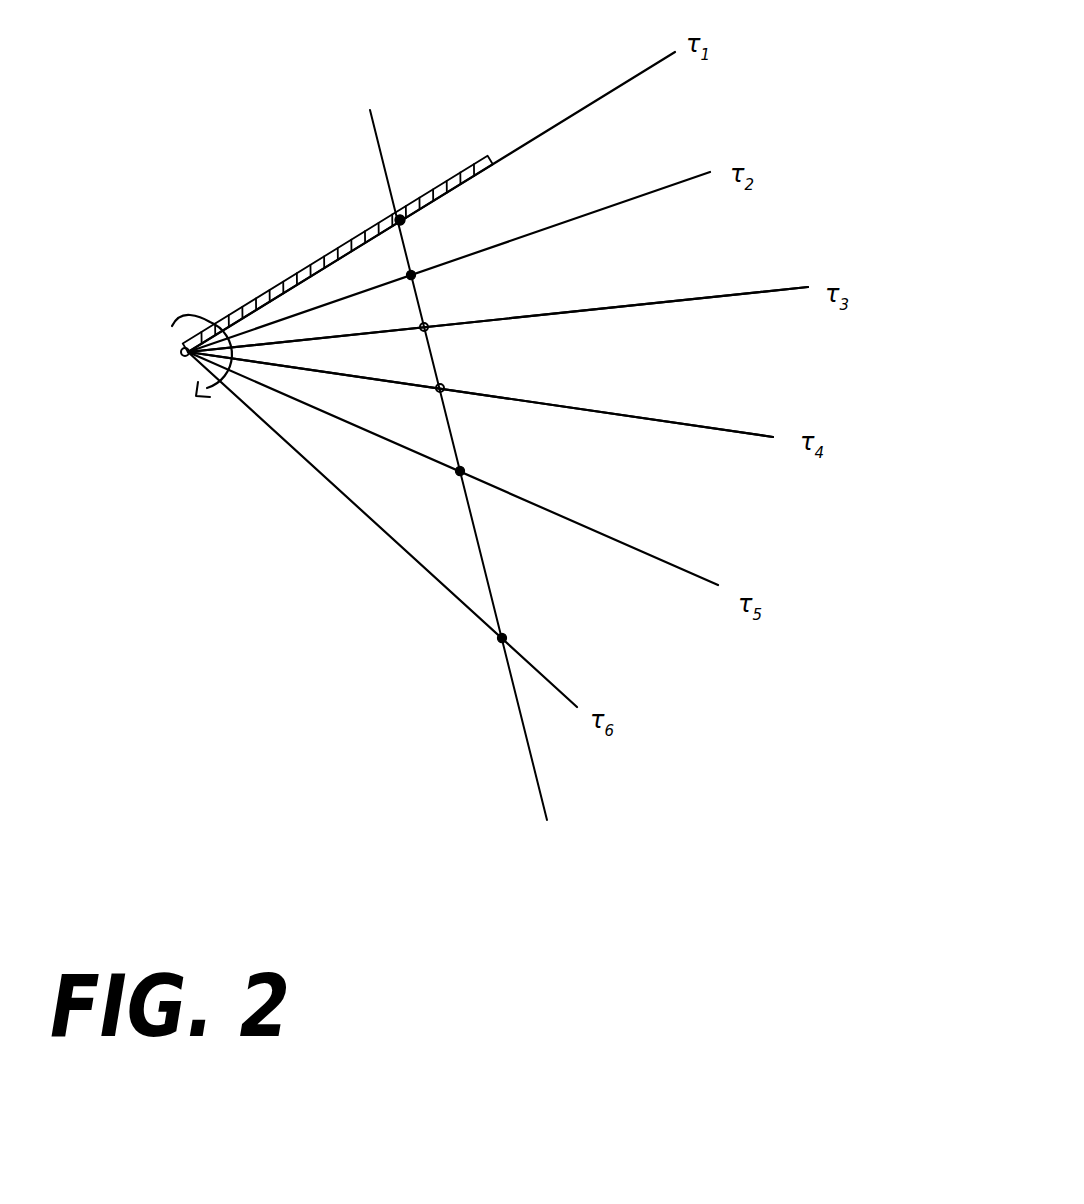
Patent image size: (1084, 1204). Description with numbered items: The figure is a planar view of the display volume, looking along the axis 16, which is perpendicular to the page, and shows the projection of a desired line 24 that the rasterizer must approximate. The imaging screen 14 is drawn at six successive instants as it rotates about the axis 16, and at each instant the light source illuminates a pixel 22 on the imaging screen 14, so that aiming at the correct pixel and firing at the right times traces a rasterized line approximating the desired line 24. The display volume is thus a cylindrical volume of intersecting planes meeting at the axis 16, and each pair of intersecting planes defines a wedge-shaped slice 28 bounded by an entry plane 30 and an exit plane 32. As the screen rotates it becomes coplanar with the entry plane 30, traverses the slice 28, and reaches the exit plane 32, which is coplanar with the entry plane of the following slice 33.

The imaging screen 14 is at (300, 264).
The axis 16 is at (182, 352).
The pixel 22 is at (404, 208).
The desired line 24 is at (533, 805).
The wedge-shaped slice 28 is at (664, 357).
The entry plane 30 is at (643, 303).
The exit plane 32 is at (690, 423).
The following slice 33 is at (681, 502).